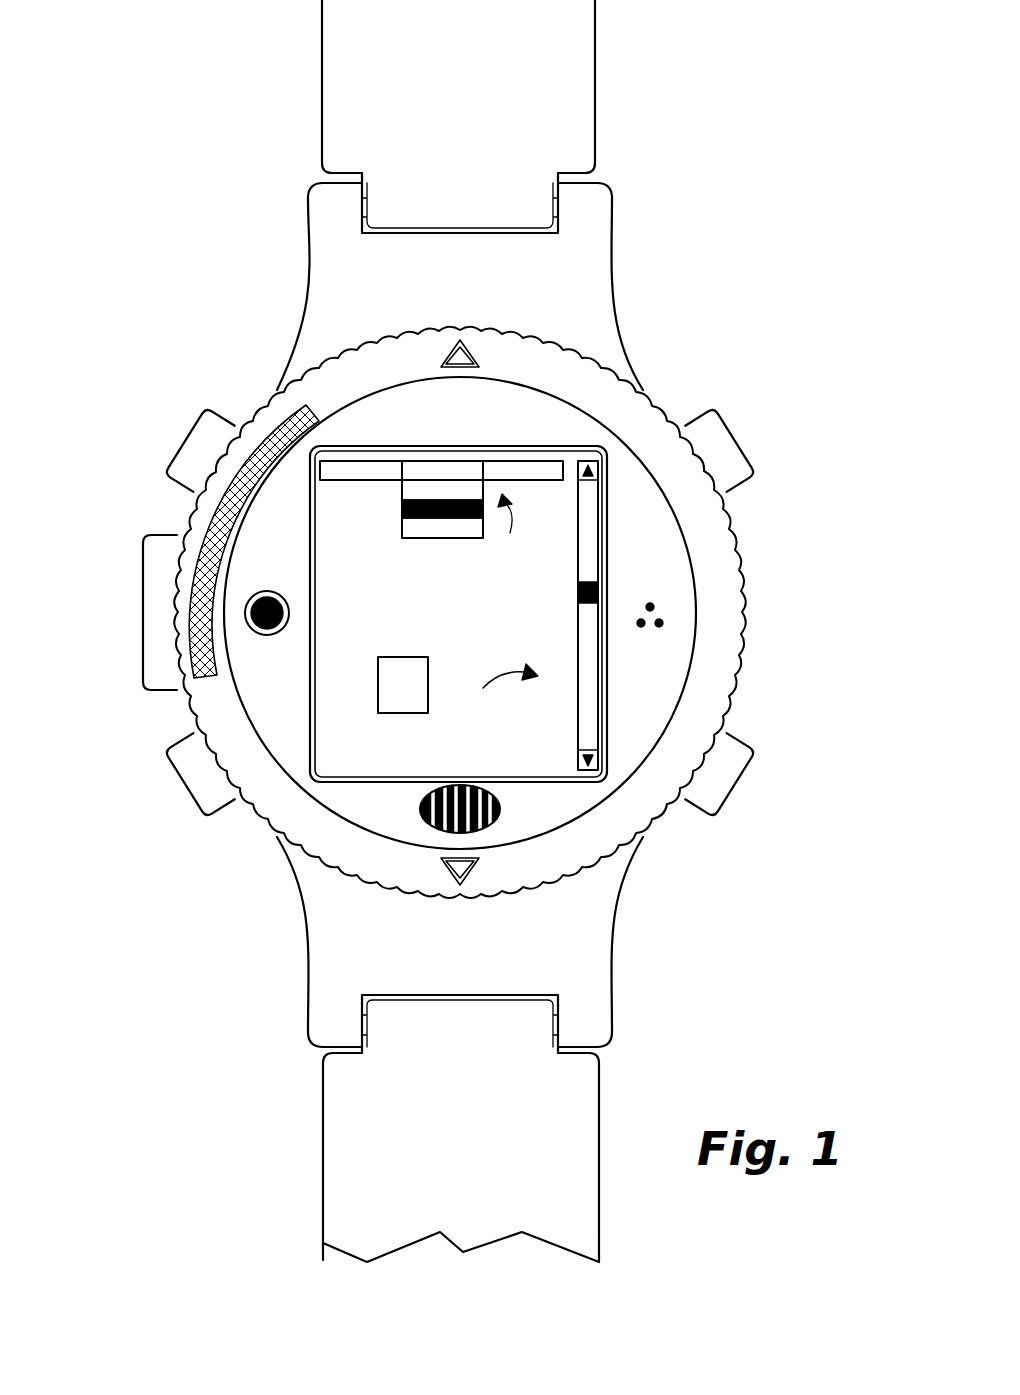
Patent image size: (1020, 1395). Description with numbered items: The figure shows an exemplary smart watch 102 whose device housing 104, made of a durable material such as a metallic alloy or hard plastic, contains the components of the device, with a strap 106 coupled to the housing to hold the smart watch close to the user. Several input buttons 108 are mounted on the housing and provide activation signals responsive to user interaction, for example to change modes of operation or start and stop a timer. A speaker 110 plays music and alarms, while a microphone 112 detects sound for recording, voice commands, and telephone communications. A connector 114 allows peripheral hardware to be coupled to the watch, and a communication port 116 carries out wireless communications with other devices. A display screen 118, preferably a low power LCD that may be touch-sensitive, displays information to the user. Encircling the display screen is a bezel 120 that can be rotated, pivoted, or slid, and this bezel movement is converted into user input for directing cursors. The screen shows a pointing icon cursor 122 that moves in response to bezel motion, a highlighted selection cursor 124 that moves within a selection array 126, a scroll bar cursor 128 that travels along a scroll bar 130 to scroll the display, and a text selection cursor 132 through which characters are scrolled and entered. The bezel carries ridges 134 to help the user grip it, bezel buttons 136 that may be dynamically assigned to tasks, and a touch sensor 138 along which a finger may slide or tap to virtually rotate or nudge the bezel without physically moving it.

The smart watch 102 is at (792, 128).
The device housing 104 is at (474, 418).
The strap 106 is at (336, 65).
The input button 108 is at (193, 452).
The speaker 110 is at (501, 812).
The microphone 112 is at (652, 594).
The connector 114 is at (143, 567).
The communication port 116 is at (250, 631).
The display screen 118 is at (529, 758).
The bezel 120 is at (663, 418).
The pointing icon cursor 122 is at (501, 684).
The highlighted selection cursor 124 is at (400, 508).
The selection array 126 is at (504, 526).
The scroll bar cursor 128 is at (578, 591).
The scroll bar 130 is at (578, 494).
The text selection cursor 132 is at (380, 706).
The ridges 134 is at (757, 678).
The bezel buttons 136 is at (463, 333).
The touch sensor 138 is at (250, 422).